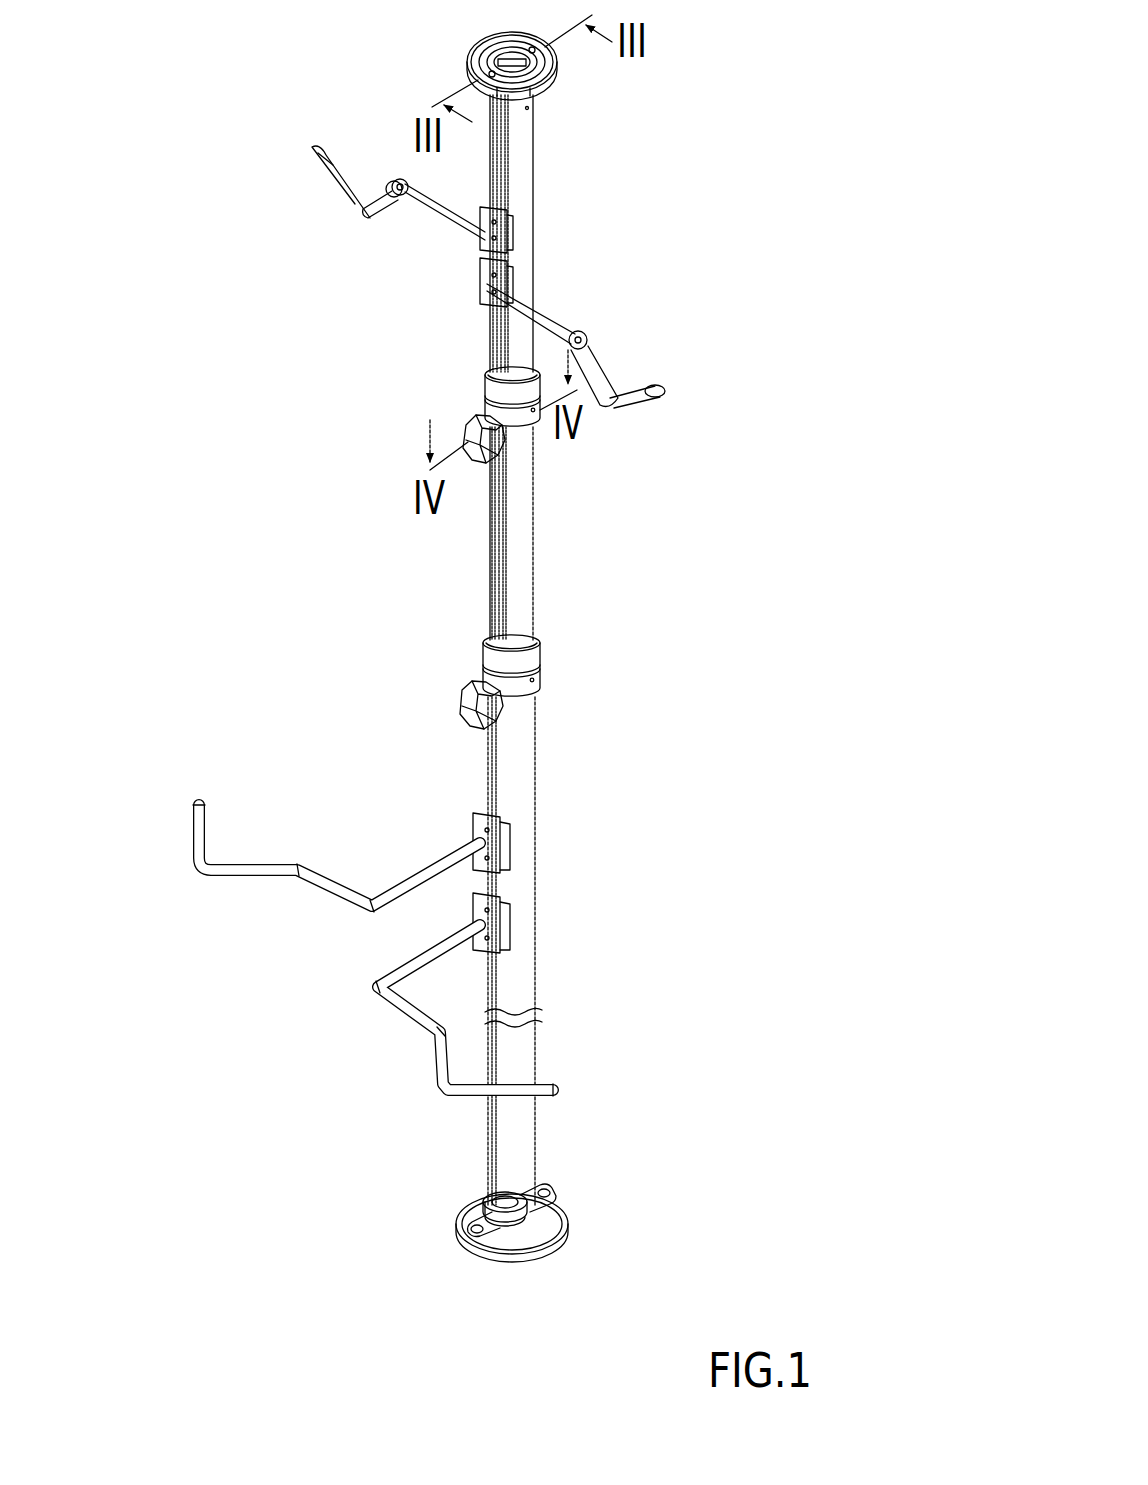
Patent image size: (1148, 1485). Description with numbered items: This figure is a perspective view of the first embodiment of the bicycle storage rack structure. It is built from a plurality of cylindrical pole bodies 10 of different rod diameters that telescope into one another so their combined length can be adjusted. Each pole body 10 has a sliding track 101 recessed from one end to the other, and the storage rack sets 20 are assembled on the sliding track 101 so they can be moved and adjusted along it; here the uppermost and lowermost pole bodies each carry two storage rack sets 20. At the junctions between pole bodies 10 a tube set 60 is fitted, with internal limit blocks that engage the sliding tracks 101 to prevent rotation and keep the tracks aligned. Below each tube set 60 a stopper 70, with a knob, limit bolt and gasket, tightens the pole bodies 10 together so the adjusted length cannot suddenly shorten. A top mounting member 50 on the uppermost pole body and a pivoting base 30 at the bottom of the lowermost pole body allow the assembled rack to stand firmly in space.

The pole body 10 is at (540, 185).
The sliding track 101 is at (490, 365).
The top mounting member 50 is at (458, 62).
The storage rack set 20 is at (620, 330).
The stopper 70 is at (462, 425).
The tube set 60 is at (550, 650).
The pivoting base 30 is at (590, 1175).